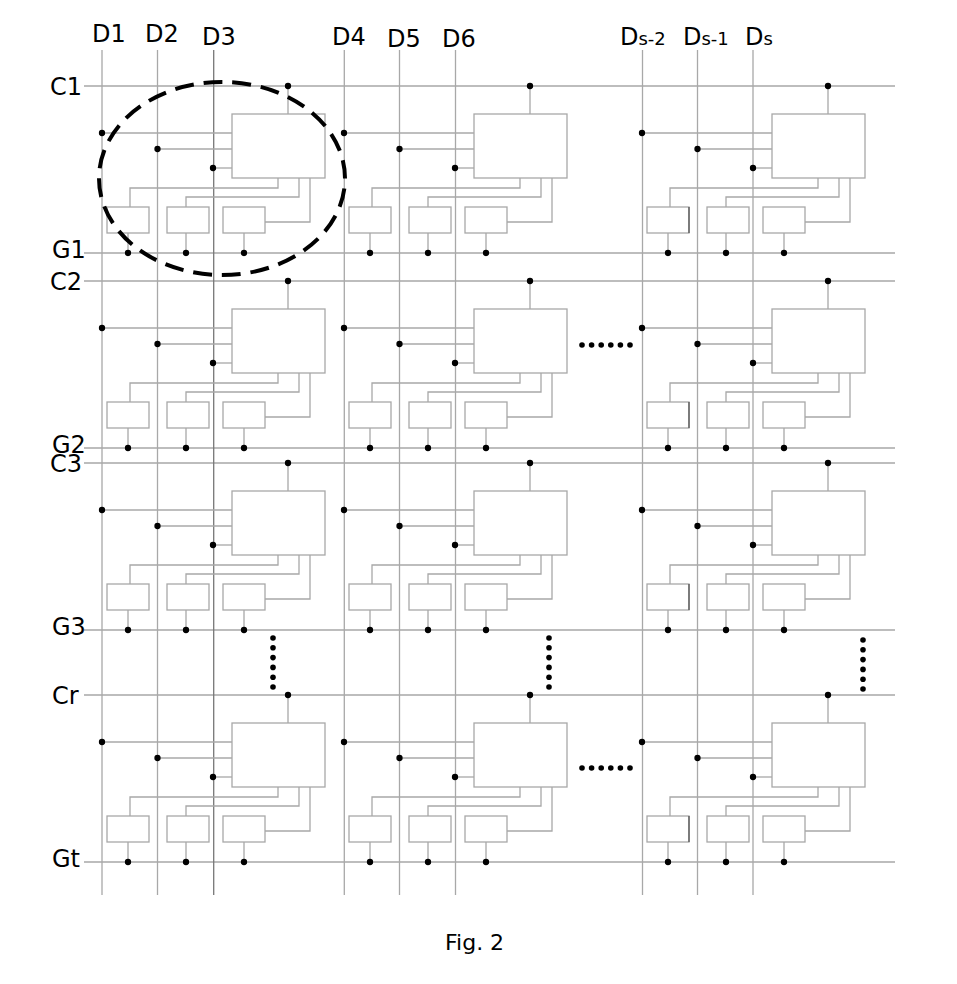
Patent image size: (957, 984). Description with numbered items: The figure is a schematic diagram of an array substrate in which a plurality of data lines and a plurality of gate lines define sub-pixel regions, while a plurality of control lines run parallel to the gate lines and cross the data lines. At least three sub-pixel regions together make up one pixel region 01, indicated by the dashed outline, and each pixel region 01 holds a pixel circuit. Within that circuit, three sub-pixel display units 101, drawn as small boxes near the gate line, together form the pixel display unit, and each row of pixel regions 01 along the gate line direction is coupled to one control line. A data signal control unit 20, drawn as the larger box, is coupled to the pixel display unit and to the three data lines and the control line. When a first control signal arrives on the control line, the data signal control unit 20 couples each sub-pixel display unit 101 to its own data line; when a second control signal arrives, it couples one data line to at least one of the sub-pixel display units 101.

The data signal control unit 20 is at (260, 138).
The pixel region 01 is at (97, 167).
The sub-pixel display unit 101 is at (107, 218).